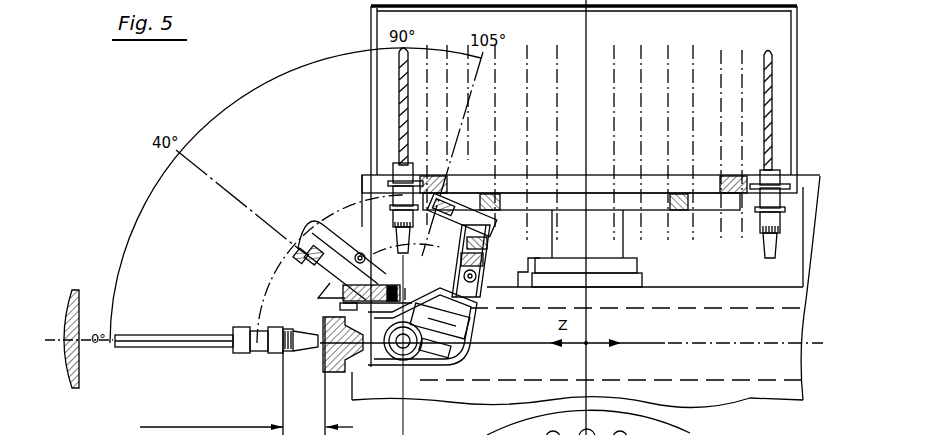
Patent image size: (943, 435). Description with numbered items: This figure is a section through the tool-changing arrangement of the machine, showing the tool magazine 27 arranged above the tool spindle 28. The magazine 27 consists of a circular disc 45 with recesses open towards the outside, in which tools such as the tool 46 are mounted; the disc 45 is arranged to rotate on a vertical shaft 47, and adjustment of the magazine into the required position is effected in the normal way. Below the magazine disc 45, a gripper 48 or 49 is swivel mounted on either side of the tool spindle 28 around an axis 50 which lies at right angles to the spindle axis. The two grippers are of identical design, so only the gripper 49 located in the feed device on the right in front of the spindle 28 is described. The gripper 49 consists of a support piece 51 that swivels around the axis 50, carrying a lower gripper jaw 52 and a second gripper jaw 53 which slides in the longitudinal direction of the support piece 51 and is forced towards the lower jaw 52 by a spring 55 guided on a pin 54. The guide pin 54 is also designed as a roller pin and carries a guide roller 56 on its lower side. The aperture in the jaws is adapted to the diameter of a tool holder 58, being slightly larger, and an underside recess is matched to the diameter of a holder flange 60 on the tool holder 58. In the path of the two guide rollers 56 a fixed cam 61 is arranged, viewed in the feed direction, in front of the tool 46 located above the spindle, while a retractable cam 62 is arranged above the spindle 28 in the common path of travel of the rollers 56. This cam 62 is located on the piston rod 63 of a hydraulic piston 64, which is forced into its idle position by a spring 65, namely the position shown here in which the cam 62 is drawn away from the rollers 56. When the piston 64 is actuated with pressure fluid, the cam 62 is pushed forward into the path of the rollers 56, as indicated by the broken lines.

The tool magazine 27 is at (348, 48).
The tool spindle 28 is at (328, 378).
The circular disc 45 is at (648, 180).
The tool 46 is at (410, 98).
The vertical shaft 47 is at (617, 243).
The gripper 48 is at (292, 256).
The gripper 49 is at (459, 378).
The axis 50 is at (395, 365).
The support piece 51 is at (468, 323).
The gripper jaw 52 is at (459, 228).
The second gripper jaw 53 is at (490, 207).
The guide pin 54 is at (488, 236).
The spring 55 is at (484, 254).
The guide roller 56 is at (480, 278).
The tool holder 58 is at (395, 250).
The holder flange 60 is at (583, 187).
The fixed cam 61 is at (443, 266).
The retractable cam 62 is at (322, 300).
The piston rod 63 is at (360, 262).
The hydraulic piston 64 is at (414, 295).
The spring 65 is at (376, 287).